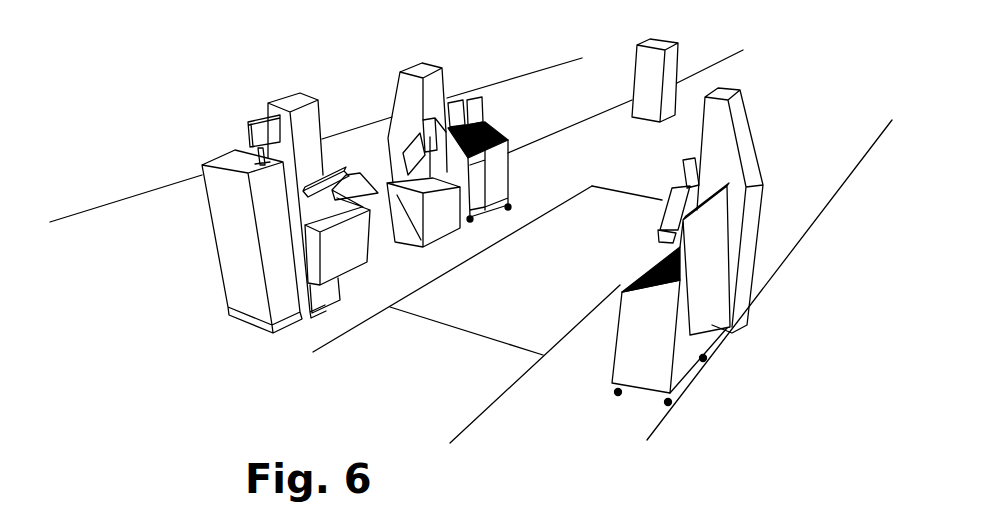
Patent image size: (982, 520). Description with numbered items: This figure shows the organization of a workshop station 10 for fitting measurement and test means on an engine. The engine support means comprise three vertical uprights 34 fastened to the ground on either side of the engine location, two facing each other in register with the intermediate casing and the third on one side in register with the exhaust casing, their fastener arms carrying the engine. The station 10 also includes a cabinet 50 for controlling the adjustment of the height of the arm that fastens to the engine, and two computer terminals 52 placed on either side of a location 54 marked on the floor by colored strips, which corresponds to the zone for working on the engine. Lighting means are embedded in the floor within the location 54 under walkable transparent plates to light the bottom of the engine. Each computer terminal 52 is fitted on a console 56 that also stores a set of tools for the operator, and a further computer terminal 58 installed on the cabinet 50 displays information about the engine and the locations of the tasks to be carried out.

The fitting and removal station 10 is at (602, 159).
The vertical uprights 34 is at (311, 125).
The cabinet 50 is at (235, 262).
The computer terminals 52 is at (707, 230).
The location marked on the floor 54 is at (556, 208).
The console 56 is at (506, 133).
The computer terminal on the cabinet 58 is at (252, 135).